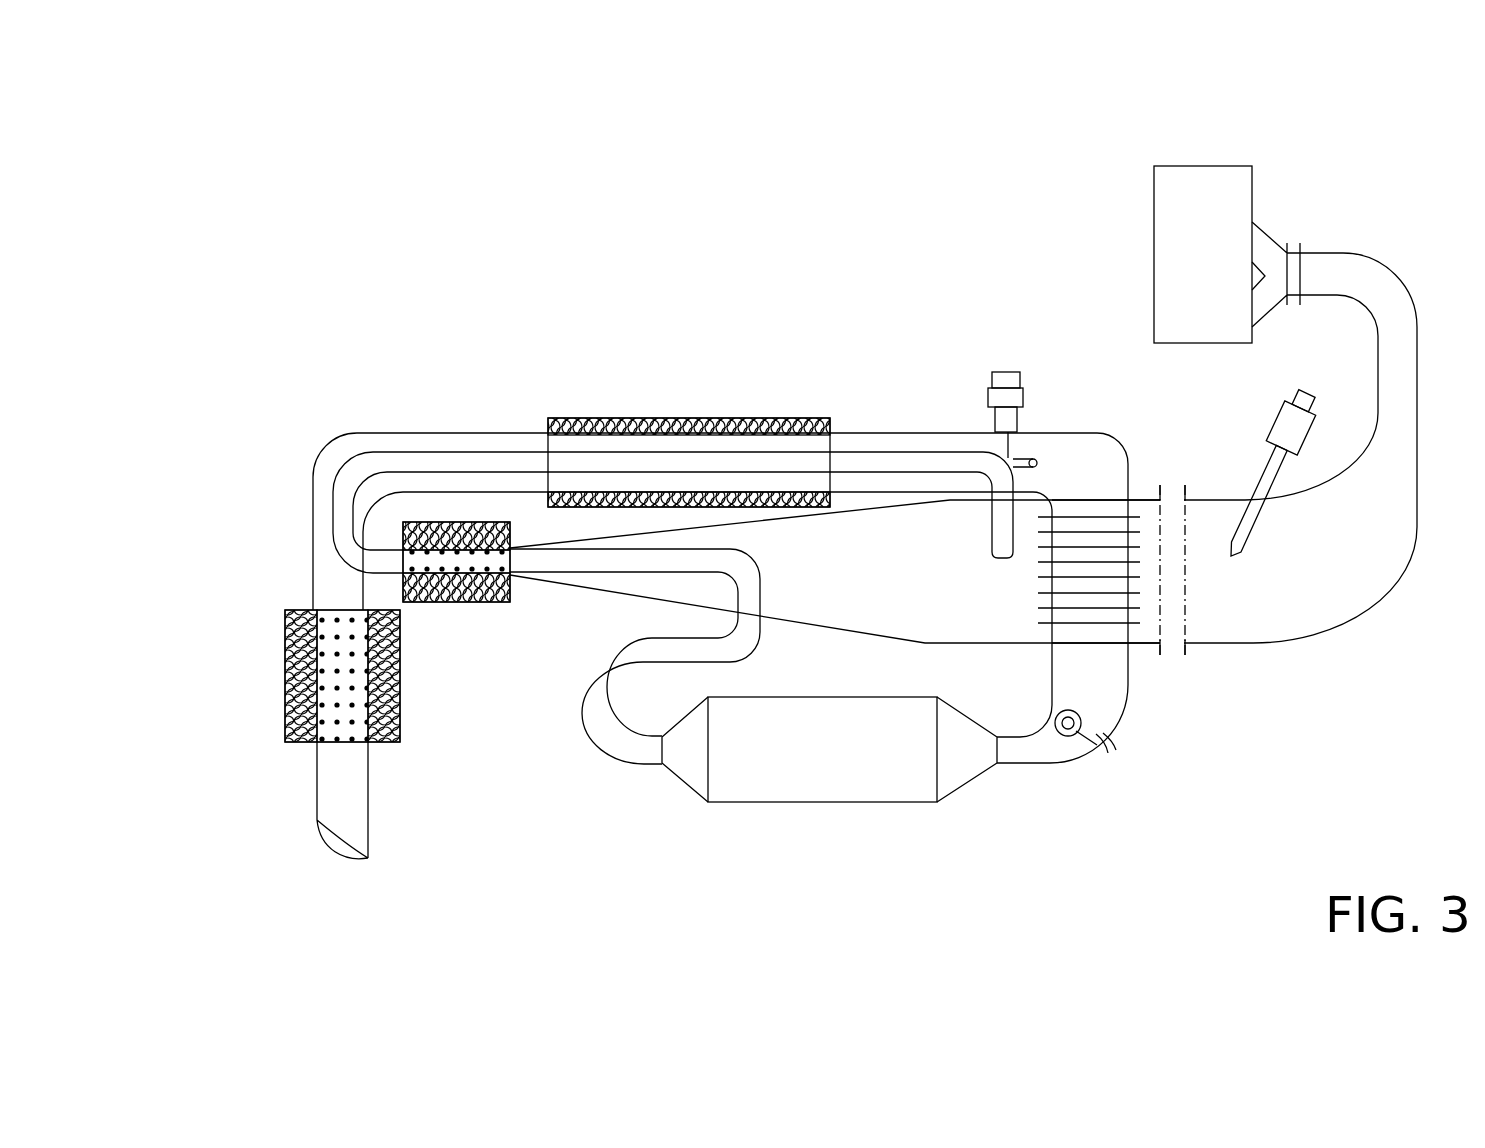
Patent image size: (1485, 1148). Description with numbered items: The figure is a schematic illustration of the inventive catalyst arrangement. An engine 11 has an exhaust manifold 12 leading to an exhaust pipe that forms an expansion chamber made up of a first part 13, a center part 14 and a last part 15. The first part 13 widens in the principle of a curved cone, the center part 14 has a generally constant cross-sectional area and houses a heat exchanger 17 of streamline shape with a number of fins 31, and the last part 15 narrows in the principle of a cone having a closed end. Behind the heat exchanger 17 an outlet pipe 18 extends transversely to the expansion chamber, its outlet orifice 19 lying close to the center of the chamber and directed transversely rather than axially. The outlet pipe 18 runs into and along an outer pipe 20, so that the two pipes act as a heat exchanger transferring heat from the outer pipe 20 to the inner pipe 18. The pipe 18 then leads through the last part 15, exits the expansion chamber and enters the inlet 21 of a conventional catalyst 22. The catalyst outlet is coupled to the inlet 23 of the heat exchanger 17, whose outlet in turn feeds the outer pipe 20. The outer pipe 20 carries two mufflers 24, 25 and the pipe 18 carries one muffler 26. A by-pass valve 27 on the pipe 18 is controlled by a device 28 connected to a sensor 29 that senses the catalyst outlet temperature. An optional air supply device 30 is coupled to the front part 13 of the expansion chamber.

The engine 11 is at (1180, 166).
The exhaust manifold 12 is at (1272, 233).
The first part of the expansion chamber 13 is at (1305, 533).
The center part of the expansion chamber 14 is at (1023, 617).
The last part of the expansion chamber 15 is at (813, 580).
The heat exchanger 17 is at (1107, 532).
The outlet pipe 18 is at (998, 522).
The outlet orifice 19 is at (992, 560).
The outer pipe 20 is at (480, 432).
The inlet of the catalyst 21 is at (662, 763).
The catalyst 22 is at (827, 797).
The inlet of the heat exchanger 23 is at (1052, 648).
The muffler 24 is at (600, 418).
The muffler 25 is at (285, 662).
The muffler 26 is at (475, 603).
The by-pass valve 27 is at (1037, 458).
The device 28 is at (1020, 382).
The sensor 29 is at (1066, 737).
The air supply device 30 is at (1285, 428).
The fins 31 is at (1092, 515).